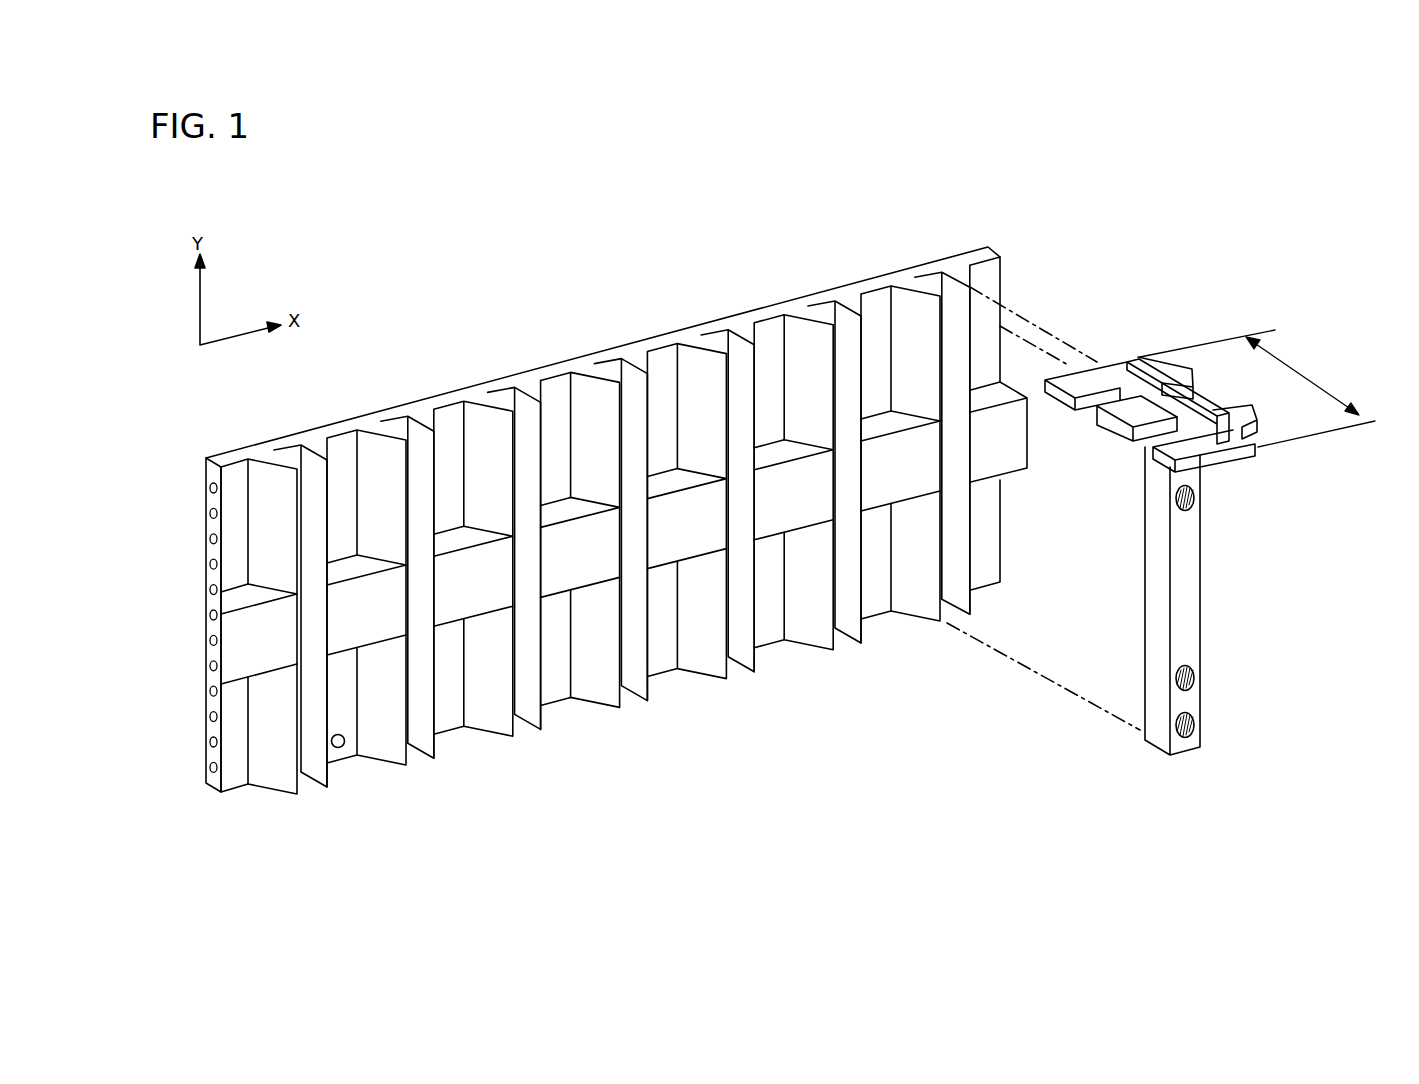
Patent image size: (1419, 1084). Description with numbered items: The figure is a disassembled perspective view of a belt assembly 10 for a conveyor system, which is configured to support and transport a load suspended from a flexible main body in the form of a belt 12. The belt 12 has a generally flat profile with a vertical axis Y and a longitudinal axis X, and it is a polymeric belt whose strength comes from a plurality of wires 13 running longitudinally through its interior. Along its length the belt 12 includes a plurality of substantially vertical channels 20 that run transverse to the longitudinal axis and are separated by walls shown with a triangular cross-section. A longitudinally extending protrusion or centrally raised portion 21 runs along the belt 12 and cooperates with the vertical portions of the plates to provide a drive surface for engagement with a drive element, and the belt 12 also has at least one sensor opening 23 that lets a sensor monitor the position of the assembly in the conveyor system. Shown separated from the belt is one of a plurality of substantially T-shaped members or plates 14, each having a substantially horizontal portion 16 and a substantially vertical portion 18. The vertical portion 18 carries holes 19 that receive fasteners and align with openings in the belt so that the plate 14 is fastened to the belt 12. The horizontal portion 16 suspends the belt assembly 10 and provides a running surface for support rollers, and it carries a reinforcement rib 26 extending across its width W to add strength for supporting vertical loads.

The belt assembly 10 is at (949, 802).
The belt 12 is at (358, 422).
The wires 13 is at (207, 612).
The T-shaped member 14 is at (1149, 538).
The horizontal portion 16 is at (1086, 378).
The vertical portion 18 is at (1190, 548).
The hole 19 is at (1197, 682).
The vertical channels 20 is at (612, 372).
The centrally raised portion 21 is at (253, 642).
The sensor opening 23 is at (345, 748).
The reinforcement rib 26 is at (1137, 368).